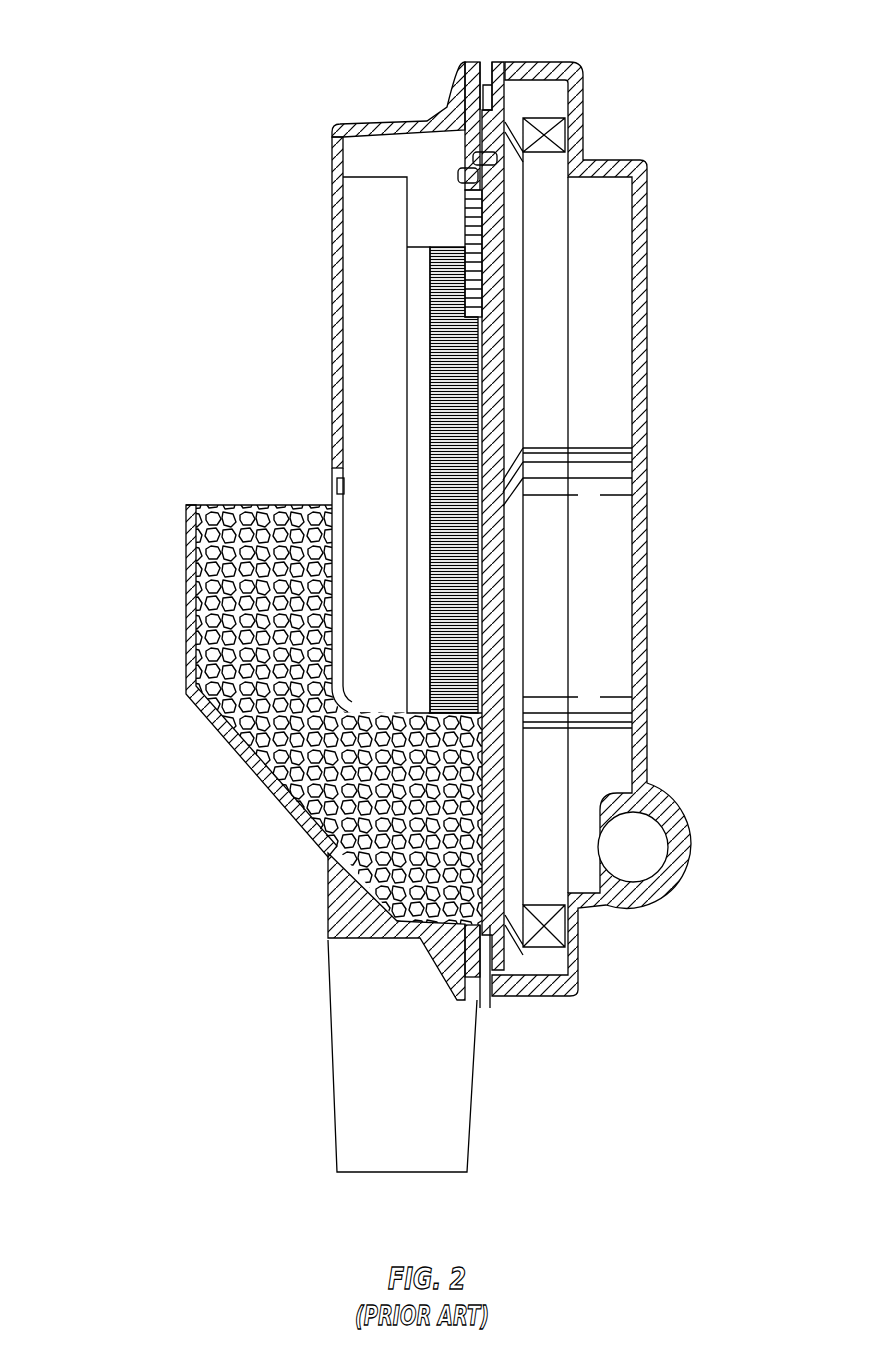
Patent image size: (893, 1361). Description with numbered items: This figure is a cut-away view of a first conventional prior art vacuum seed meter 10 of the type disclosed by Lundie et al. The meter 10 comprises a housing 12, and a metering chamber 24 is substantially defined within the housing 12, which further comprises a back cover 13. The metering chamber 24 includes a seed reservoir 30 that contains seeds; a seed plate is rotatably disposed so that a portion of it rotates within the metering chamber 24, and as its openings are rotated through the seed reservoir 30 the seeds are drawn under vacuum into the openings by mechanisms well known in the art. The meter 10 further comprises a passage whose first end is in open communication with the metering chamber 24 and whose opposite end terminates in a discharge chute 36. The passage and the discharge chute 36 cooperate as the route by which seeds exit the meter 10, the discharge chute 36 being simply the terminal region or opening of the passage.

The vacuum seed meter 10 is at (693, 86).
The housing 12 is at (363, 124).
The back cover 13 is at (338, 322).
The metering chamber 24 is at (455, 485).
The seed reservoir 30 is at (158, 672).
The discharge chute 36 is at (393, 1160).